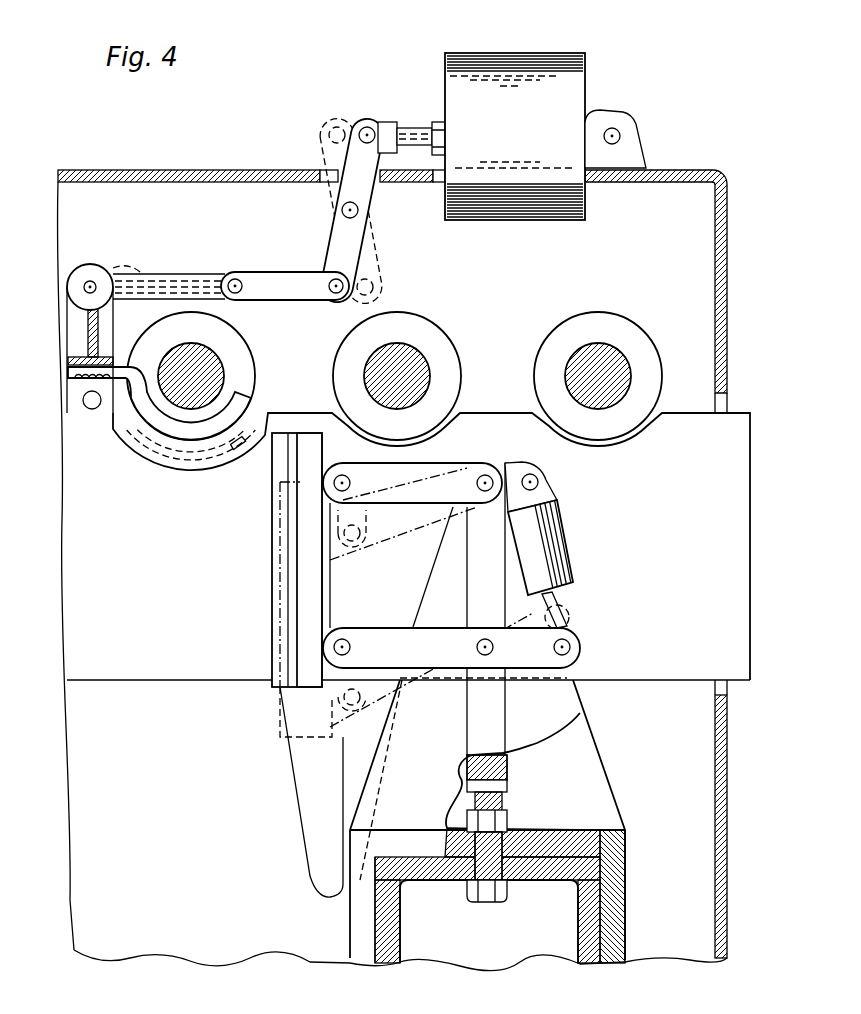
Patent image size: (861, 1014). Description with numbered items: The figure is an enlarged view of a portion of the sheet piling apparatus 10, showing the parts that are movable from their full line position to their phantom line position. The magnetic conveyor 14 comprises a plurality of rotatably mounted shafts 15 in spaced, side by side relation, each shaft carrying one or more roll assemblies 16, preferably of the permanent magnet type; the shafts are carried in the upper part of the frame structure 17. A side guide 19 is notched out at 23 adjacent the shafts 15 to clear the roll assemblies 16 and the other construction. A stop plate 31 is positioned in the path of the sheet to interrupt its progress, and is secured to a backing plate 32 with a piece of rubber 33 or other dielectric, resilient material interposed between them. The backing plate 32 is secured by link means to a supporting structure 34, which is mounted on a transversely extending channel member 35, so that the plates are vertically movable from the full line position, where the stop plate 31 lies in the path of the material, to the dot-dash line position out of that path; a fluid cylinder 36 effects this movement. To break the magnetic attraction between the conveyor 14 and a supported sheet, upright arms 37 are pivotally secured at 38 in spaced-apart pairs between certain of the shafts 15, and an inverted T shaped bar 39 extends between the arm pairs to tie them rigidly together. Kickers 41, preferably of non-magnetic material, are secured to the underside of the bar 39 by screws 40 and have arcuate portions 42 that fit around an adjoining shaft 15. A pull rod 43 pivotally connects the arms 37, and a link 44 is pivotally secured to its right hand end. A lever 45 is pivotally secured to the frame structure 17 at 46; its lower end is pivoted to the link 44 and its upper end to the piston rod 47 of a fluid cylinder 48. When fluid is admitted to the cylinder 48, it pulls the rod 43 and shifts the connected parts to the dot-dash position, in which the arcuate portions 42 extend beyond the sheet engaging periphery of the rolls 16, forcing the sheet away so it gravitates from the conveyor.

The apparatus 10 is at (678, 158).
The conveyor 14 is at (685, 355).
The shaft 15 is at (208, 368).
The roll assembly 16 is at (260, 363).
The frame structure 17 is at (735, 222).
The side guide 19 is at (155, 660).
The notch 23 is at (234, 460).
The stop plate 31 is at (273, 535).
The backing plate 32 is at (313, 598).
The piece of rubber 33 is at (295, 605).
The supporting structure 34 is at (608, 755).
The channel member 35 is at (553, 865).
The fluid cylinder 36 is at (553, 540).
The upright arm 37 is at (97, 272).
The pivot 38 is at (88, 403).
The inverted T shaped bar 39 is at (88, 338).
The screw 40 is at (92, 380).
The kicker 41 is at (150, 428).
The arcuate portion 42 is at (208, 425).
The pull rod 43 is at (175, 283).
The link 44 is at (270, 283).
The lever 45 is at (333, 245).
The pivot 46 is at (358, 211).
The piston rod 47 is at (415, 133).
The fluid cylinder 48 is at (568, 108).